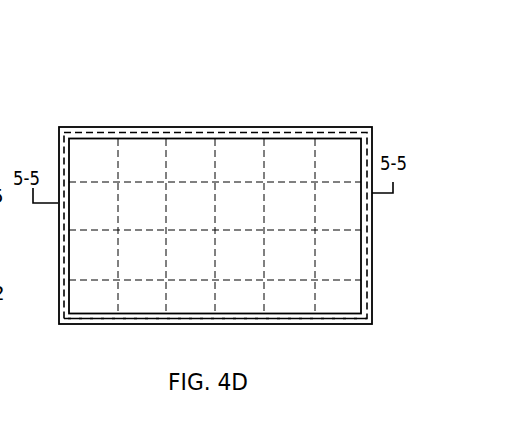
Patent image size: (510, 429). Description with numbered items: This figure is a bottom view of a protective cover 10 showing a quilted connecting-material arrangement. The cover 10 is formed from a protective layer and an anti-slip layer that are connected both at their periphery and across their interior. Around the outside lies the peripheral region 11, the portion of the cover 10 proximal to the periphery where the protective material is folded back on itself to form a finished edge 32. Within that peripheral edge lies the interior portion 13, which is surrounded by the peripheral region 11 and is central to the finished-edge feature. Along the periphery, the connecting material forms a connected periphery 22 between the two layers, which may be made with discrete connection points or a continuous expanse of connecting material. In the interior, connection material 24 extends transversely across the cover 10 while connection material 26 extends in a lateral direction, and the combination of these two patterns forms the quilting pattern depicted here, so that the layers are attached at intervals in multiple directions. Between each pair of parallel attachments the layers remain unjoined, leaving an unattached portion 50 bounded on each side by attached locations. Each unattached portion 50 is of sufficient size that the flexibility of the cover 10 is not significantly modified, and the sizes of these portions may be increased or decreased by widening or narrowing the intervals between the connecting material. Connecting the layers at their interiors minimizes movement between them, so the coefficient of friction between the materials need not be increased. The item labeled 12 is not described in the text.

The protective cover 10 is at (364, 126).
The peripheral region 11 is at (180, 127).
The display area 12 is at (338, 250).
The interior portion 13 is at (193, 226).
The connected periphery 22 is at (343, 318).
The connection material 24 is at (314, 172).
The connection material 26 is at (142, 182).
The finished edge 32 is at (275, 136).
The unattached portion 50 is at (243, 257).